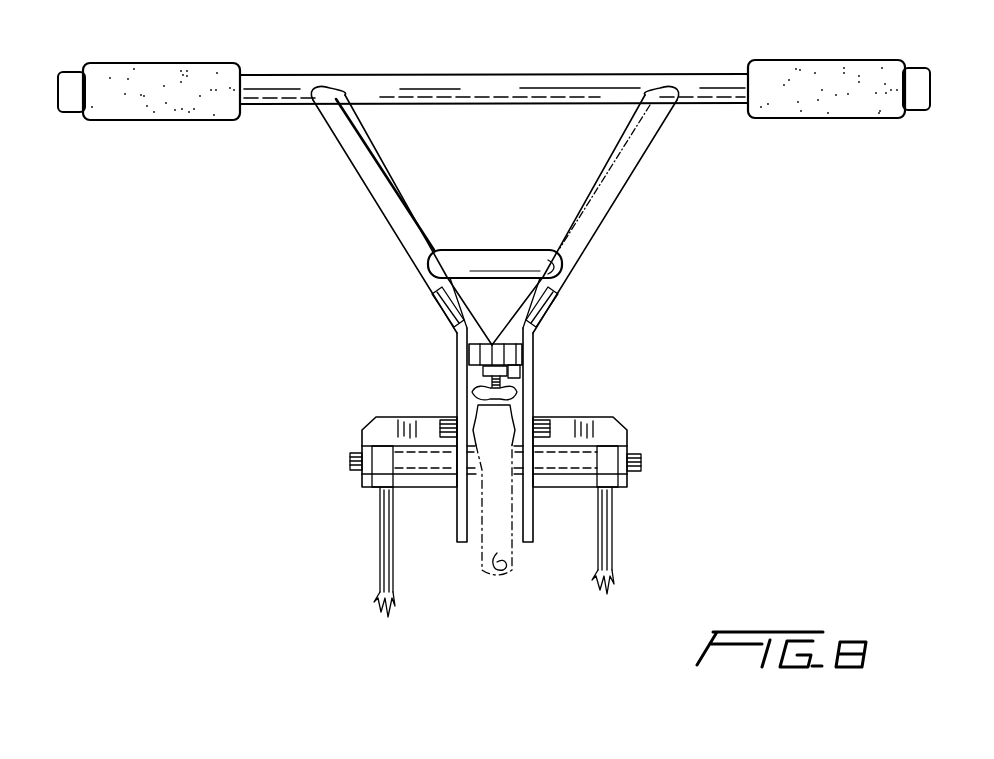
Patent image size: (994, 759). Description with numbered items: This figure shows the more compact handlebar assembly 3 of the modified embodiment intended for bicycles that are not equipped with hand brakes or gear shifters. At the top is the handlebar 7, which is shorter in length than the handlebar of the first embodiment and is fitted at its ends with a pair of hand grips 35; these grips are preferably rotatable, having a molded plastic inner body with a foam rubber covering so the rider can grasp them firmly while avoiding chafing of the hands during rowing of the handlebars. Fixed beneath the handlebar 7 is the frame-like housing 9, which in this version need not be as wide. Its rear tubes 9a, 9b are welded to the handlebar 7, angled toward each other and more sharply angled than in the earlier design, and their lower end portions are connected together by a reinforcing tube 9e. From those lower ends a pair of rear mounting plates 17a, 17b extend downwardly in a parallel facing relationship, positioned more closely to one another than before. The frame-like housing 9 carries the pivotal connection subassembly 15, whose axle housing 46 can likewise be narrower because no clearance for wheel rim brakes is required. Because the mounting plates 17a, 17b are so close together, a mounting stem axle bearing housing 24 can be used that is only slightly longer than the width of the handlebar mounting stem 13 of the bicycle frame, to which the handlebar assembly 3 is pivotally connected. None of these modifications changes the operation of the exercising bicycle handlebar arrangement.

The handlebar assembly 3 is at (494, 310).
The handlebar 7 is at (293, 73).
The hand grips 35 is at (181, 56).
The frame-like housing 9 is at (498, 216).
The rear tube 9a is at (386, 212).
The rear tube 9b is at (628, 152).
The reinforcing tube 9e is at (515, 250).
The rear mounting plate 17a is at (460, 352).
The rear mounting plate 17b is at (534, 358).
The pivotal connection subassembly 15 is at (466, 486).
The axle housing 46 is at (377, 430).
The mounting stem axle bearing housing 24 is at (470, 435).
The handlebar mounting stem 13 is at (493, 585).